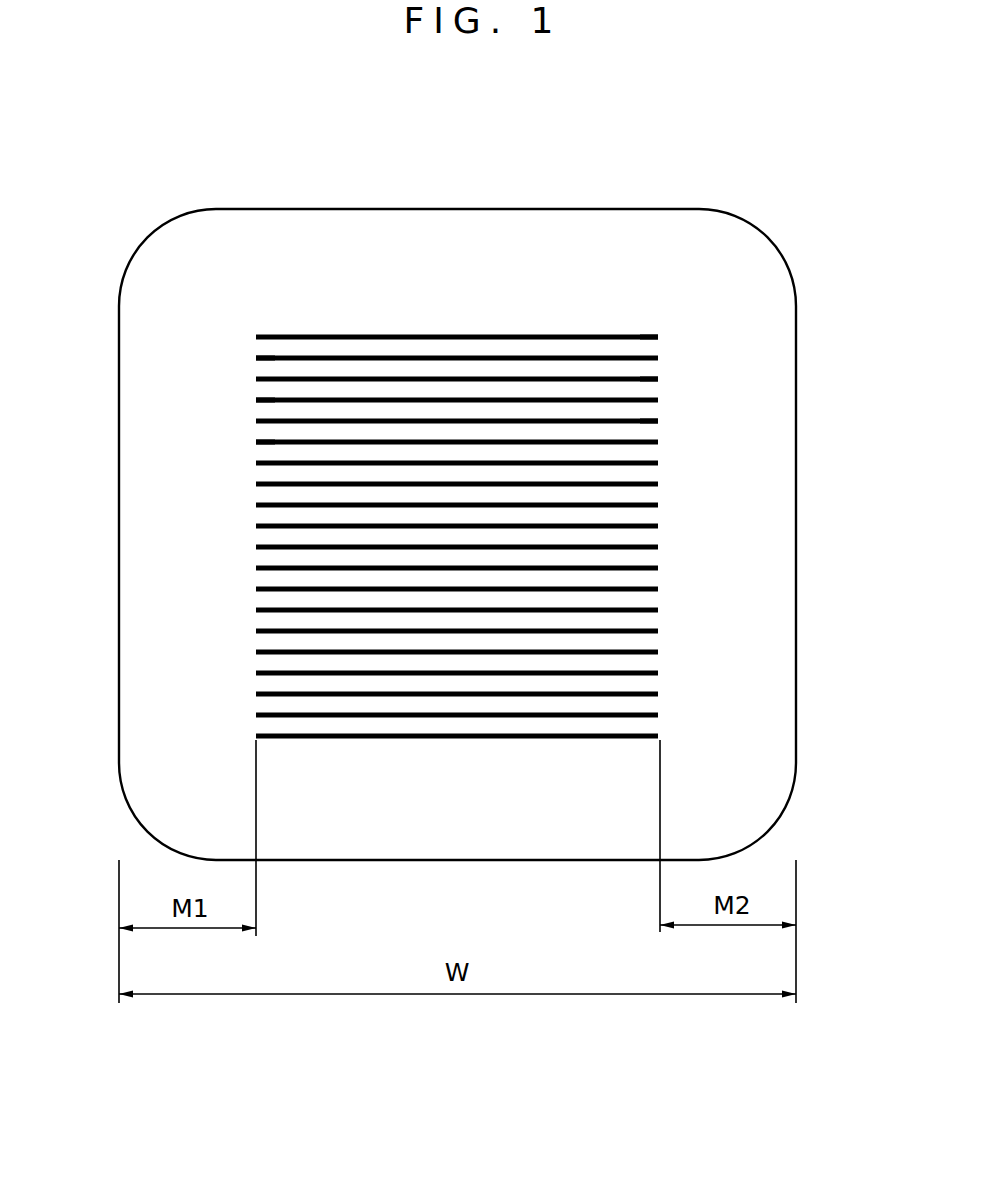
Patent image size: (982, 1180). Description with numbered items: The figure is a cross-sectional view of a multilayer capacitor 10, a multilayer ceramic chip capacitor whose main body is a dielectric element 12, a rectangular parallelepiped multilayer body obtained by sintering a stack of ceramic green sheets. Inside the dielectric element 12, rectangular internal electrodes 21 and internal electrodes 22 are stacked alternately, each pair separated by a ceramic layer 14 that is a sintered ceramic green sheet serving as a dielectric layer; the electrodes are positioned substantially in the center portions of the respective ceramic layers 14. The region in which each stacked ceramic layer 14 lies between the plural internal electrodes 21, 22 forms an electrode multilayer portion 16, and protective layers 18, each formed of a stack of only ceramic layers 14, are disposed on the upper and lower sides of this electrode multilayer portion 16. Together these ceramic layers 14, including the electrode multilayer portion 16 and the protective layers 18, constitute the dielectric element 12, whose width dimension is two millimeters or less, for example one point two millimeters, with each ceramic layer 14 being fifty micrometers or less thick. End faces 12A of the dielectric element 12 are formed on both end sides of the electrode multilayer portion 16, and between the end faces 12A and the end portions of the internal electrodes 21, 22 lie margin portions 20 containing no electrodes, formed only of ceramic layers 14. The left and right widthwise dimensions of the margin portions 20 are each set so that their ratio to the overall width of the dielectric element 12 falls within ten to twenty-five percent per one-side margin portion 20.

The multilayer capacitor 10 is at (835, 272).
The dielectric element 12 is at (765, 233).
The end faces 12A is at (119, 537).
The ceramic layer 14 is at (345, 415).
The electrode multilayer portion 16 is at (665, 522).
The protective layers 18 is at (517, 253).
The margin portions 20 is at (157, 608).
The internal electrode 21 is at (640, 413).
The internal electrode 22 is at (287, 438).